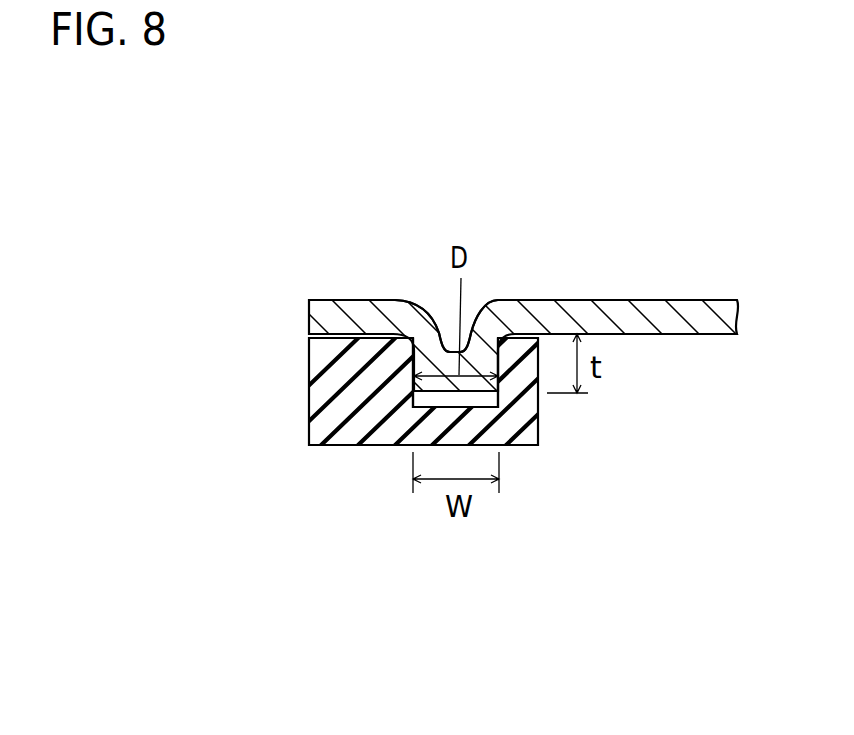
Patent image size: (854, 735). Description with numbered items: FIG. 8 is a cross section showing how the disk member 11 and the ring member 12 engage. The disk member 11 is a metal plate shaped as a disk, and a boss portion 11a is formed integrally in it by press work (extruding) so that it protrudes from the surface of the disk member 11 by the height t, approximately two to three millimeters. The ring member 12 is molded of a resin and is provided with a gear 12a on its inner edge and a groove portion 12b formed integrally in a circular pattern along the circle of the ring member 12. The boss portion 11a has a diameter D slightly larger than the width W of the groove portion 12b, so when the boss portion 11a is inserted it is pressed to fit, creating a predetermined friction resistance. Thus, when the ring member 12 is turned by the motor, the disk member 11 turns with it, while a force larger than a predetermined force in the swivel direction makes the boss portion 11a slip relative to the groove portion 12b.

The disk member 11 is at (644, 300).
The boss portion 11a is at (450, 353).
The ring member 12 is at (521, 446).
The gear 12a is at (320, 397).
The groove portion 12b is at (418, 383).